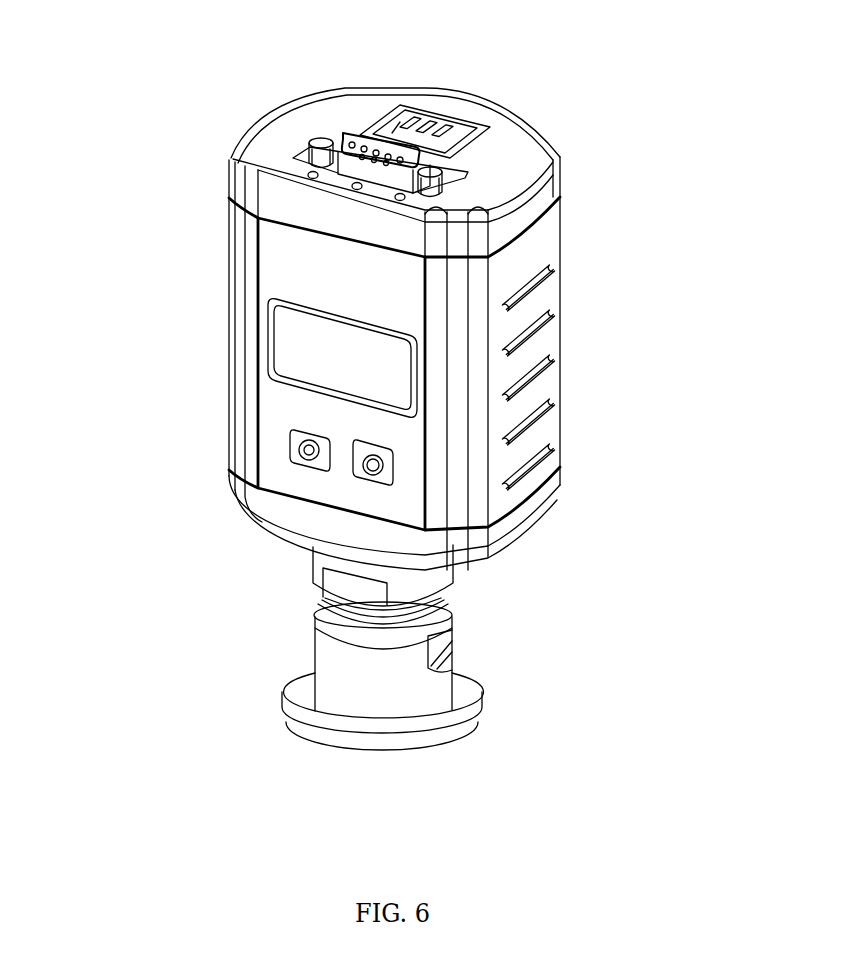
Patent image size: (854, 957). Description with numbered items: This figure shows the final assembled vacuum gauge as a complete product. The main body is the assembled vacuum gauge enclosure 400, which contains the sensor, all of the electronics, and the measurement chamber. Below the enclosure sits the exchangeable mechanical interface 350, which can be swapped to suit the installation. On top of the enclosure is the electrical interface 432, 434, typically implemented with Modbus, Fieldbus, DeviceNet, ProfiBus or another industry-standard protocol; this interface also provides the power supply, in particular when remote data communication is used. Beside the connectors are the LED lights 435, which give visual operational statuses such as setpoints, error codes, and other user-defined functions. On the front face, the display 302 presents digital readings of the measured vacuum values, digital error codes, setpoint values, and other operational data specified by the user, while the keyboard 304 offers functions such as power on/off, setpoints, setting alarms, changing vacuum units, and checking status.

The vacuum gauge enclosure 400 is at (527, 253).
The display 302 is at (315, 355).
The keyboard 304 is at (298, 458).
The exchangeable mechanical interface 350 is at (430, 692).
The electrical interface 432 is at (357, 137).
The electrical interface 434 is at (467, 113).
The LED lights 435 is at (317, 175).